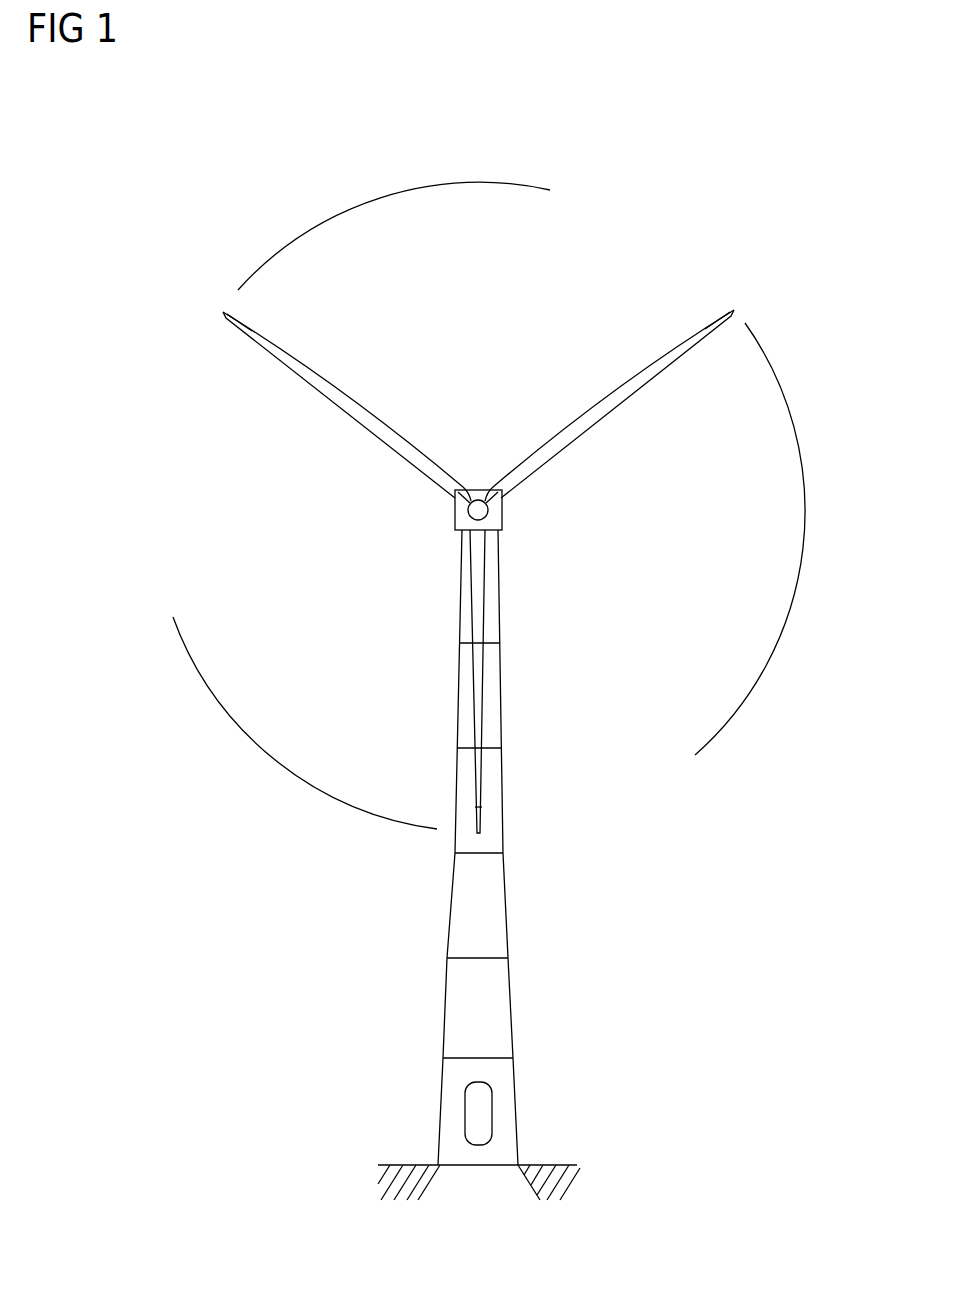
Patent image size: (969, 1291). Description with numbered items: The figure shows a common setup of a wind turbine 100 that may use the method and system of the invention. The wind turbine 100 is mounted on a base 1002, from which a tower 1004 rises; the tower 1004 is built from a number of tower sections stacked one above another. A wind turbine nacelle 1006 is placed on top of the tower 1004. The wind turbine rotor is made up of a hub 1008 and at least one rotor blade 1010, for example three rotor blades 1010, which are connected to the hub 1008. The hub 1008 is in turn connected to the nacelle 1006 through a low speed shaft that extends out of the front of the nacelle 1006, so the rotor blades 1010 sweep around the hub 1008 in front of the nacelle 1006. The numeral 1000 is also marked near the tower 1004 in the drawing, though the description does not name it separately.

The wind turbine 100 is at (795, 110).
The wind turbine 1000 is at (402, 980).
The base 1002 is at (430, 1183).
The tower 1004 is at (505, 905).
The wind turbine nacelle 1006 is at (504, 514).
The hub 1008 is at (455, 515).
The rotor blade 1010 is at (481, 722).